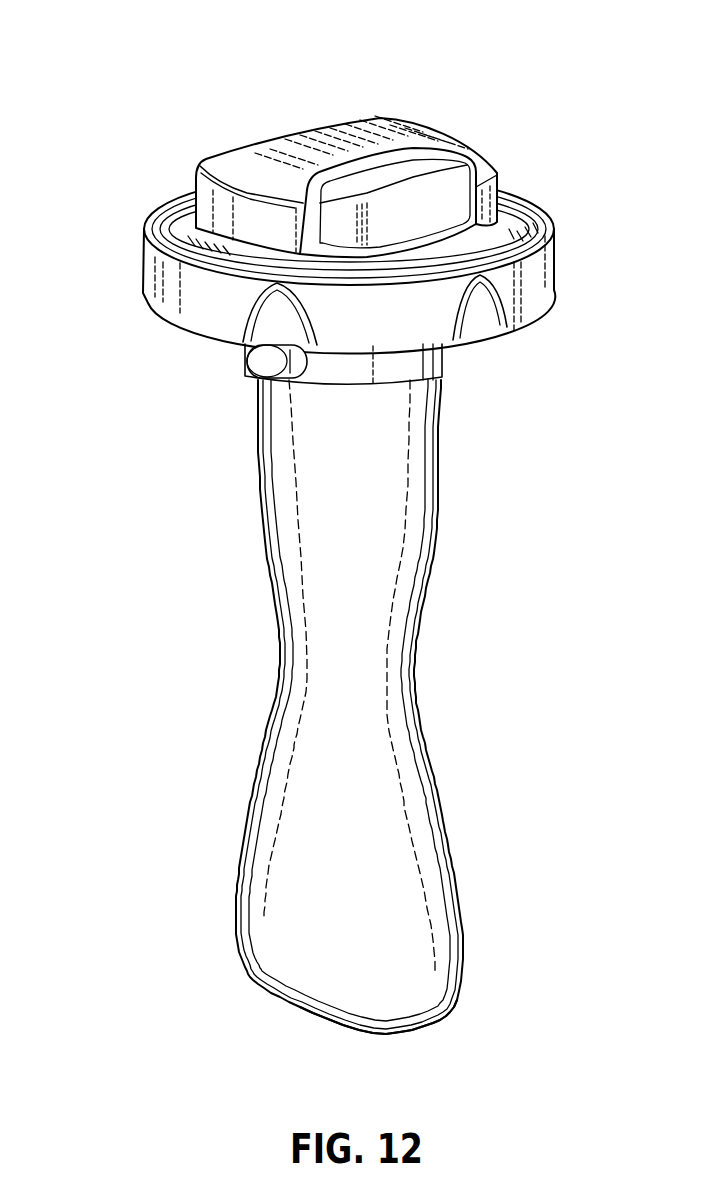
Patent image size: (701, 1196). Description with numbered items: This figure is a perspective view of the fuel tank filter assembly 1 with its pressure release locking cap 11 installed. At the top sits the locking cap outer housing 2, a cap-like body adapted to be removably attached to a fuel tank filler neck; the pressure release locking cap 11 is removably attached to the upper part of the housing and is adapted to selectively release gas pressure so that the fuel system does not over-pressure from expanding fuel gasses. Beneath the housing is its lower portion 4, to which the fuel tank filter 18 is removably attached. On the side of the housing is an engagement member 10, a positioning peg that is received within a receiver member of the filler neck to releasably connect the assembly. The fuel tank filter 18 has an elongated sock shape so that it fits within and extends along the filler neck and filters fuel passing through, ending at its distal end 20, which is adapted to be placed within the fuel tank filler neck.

The fuel tank filter assembly 1 is at (92, 133).
The locking cap outer housing 2 is at (540, 275).
The lower portion 4 is at (418, 367).
The engagement member 10 is at (262, 363).
The pressure release locking cap 11 is at (412, 133).
The fuel tank filter 18 is at (287, 560).
The distal end 20 is at (452, 1003).